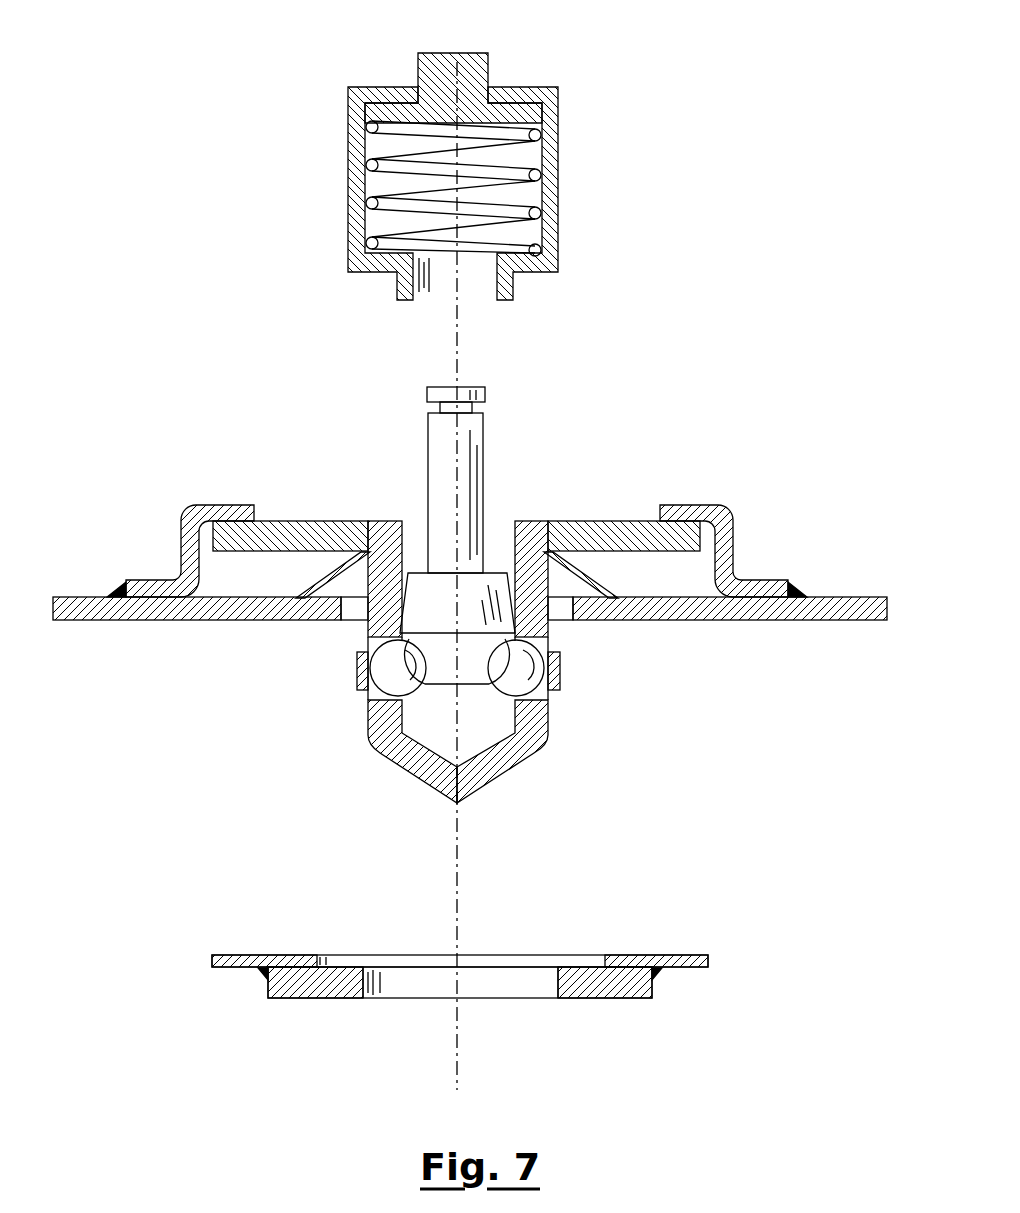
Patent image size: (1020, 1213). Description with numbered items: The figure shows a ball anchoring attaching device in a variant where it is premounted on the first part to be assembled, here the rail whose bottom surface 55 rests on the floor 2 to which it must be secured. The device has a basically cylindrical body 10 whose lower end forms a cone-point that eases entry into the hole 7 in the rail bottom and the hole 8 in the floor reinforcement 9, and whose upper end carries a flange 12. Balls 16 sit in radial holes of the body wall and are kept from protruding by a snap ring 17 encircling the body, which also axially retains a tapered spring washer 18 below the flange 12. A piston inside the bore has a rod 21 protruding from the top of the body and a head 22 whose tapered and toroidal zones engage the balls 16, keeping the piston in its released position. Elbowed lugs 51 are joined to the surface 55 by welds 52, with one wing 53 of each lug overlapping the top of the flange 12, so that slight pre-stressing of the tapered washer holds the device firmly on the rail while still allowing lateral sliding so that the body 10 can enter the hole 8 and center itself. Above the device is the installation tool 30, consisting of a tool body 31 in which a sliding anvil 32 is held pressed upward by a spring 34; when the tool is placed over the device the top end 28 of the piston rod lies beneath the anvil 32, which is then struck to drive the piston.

The floor 2 is at (655, 955).
The hole 7 is at (357, 623).
The hole 8 is at (490, 997).
The floor reinforcement 9 is at (605, 997).
The body 10 is at (548, 737).
The flange 12 is at (577, 521).
The balls 16 is at (385, 678).
The snap ring 17 is at (557, 670).
The tapered spring washer 18 is at (600, 583).
The rod 21 is at (473, 458).
The head 22 is at (420, 577).
The top end 28 is at (433, 387).
The installation tool 30 is at (502, 175).
The tool body 31 is at (558, 116).
The sliding anvil 32 is at (391, 102).
The spring 34 is at (378, 198).
The elbowed lugs 51 is at (730, 538).
The welds 52 is at (803, 582).
The wing 53 is at (688, 505).
The bottom surface 55 is at (750, 620).